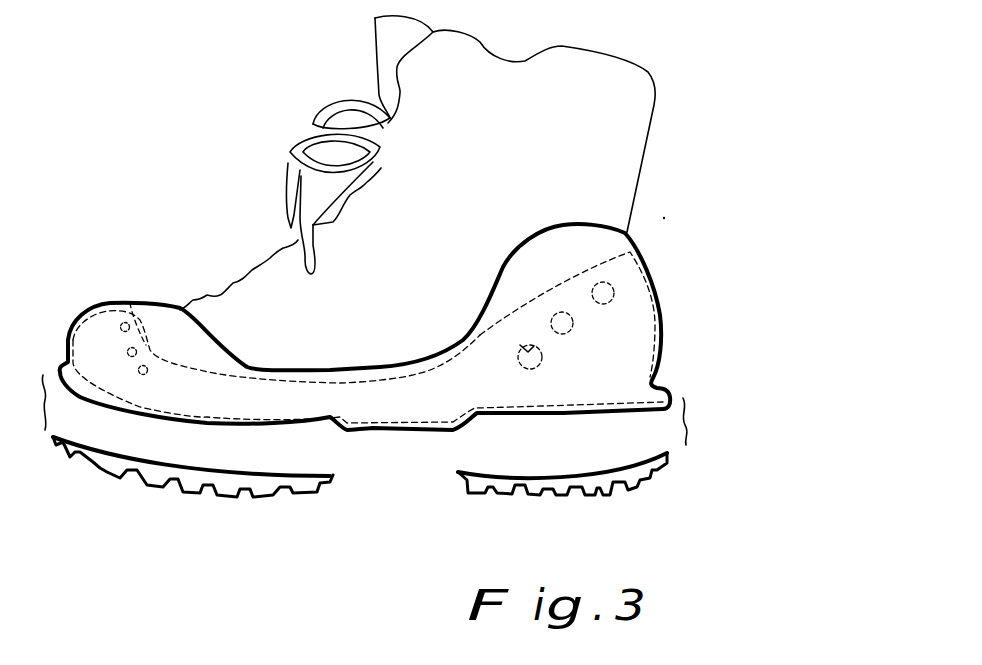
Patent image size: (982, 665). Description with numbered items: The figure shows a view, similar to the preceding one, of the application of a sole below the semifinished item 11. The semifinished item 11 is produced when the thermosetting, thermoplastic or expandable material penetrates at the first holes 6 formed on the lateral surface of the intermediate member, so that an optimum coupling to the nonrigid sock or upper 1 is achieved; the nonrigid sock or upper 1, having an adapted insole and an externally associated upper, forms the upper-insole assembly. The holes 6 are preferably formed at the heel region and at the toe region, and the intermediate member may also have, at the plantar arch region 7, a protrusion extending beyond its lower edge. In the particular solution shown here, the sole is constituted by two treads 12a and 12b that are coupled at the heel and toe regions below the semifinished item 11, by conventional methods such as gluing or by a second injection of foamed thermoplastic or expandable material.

The nonrigid sock or upper 1 is at (668, 170).
The first holes 6 is at (126, 322).
The plantar arch region 7 is at (377, 381).
The semifinished item 11 is at (513, 222).
The tread 12a is at (185, 483).
The tread 12b is at (603, 495).